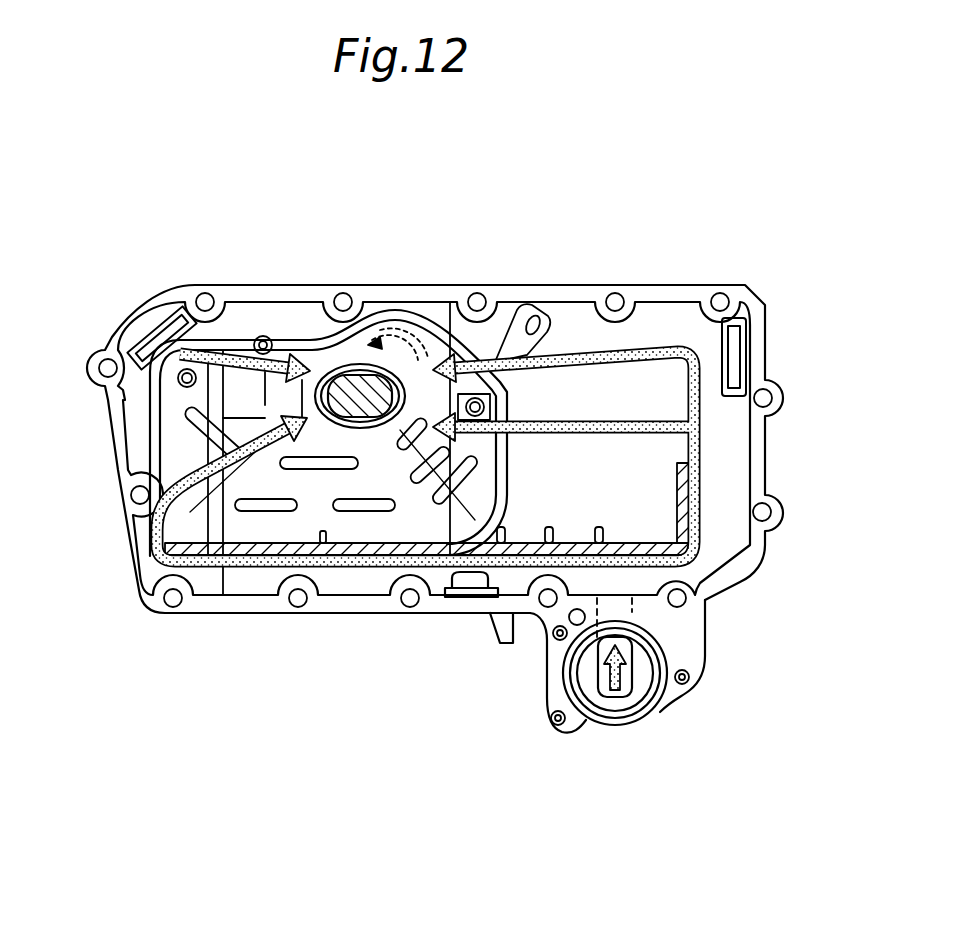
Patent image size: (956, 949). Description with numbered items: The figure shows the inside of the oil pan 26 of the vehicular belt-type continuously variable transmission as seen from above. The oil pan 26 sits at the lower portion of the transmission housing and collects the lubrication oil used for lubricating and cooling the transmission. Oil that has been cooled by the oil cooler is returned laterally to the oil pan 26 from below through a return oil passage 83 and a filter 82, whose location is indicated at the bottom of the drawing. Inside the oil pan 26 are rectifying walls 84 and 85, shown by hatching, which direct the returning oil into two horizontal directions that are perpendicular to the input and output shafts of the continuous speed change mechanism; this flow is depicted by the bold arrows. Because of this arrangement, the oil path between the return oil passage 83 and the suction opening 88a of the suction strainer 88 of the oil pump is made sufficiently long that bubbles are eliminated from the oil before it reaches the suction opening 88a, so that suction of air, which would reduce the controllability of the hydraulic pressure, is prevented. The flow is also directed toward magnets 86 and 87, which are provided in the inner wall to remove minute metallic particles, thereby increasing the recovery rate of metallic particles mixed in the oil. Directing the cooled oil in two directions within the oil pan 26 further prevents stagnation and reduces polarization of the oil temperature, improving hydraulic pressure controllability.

The oil pan 26 is at (750, 558).
The filter 82 is at (617, 703).
The return oil passage 83 is at (625, 608).
The rectifying wall 84 is at (580, 547).
The rectifying wall 85 is at (350, 553).
The magnet 86 is at (730, 357).
The magnet 87 is at (150, 335).
The suction strainer 88 is at (262, 336).
The suction opening 88a is at (348, 383).